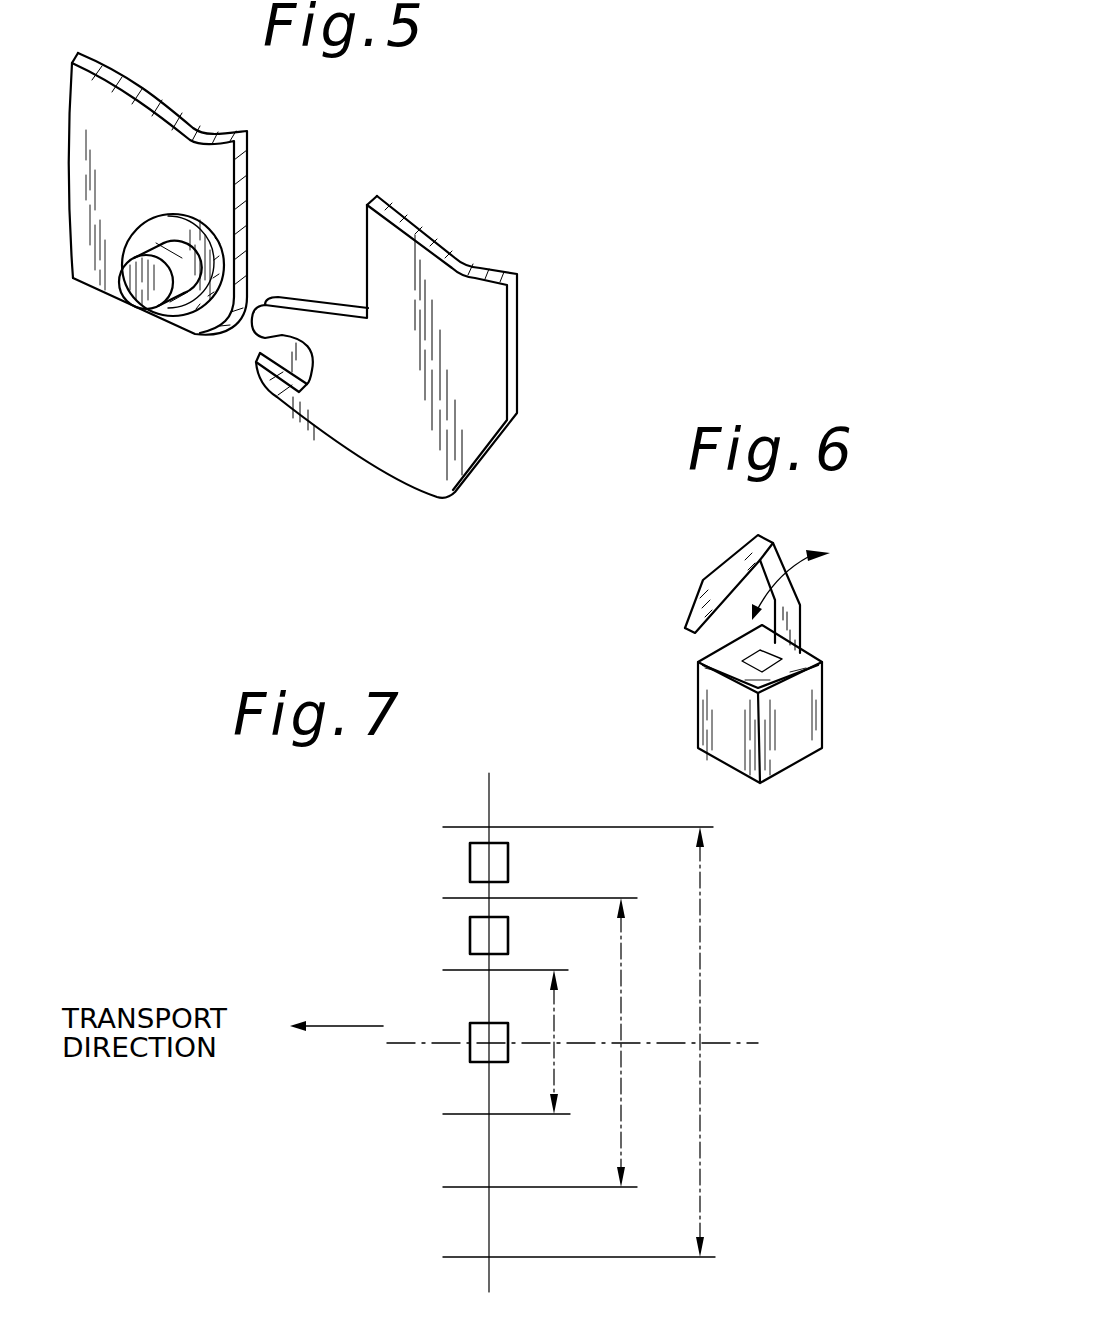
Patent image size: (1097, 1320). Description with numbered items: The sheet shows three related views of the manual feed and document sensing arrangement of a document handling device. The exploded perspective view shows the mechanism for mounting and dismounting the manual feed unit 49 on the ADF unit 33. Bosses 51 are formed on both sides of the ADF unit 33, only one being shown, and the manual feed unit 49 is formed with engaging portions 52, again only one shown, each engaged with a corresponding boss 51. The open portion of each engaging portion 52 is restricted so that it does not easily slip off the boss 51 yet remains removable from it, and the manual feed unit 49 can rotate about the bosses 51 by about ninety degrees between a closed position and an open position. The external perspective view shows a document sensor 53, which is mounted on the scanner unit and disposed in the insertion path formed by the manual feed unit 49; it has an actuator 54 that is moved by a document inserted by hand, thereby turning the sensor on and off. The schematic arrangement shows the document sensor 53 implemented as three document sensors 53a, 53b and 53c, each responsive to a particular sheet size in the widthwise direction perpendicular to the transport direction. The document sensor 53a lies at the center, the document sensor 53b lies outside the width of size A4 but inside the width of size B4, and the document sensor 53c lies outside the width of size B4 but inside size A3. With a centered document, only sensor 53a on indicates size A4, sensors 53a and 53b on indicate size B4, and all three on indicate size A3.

In FIG. 5, the ADF unit 33 is at (193, 163).
In FIG. 5, the manual feed unit 49 is at (483, 345).
In FIG. 5, the boss 51 is at (133, 288).
In FIG. 5, the engaging portion 52 is at (297, 367).
In FIG. 6, the document sensor 53 is at (793, 713).
In FIG. 7, the document sensor 53a is at (480, 1050).
In FIG. 7, the document sensor 53b is at (480, 935).
In FIG. 7, the document sensor 53c is at (480, 862).
In FIG. 6, the actuator 54 is at (730, 573).
In FIG. 7, the size A4 is at (572, 1042).
In FIG. 7, the size B4 is at (637, 1042).
In FIG. 7, the size A3 is at (716, 1042).